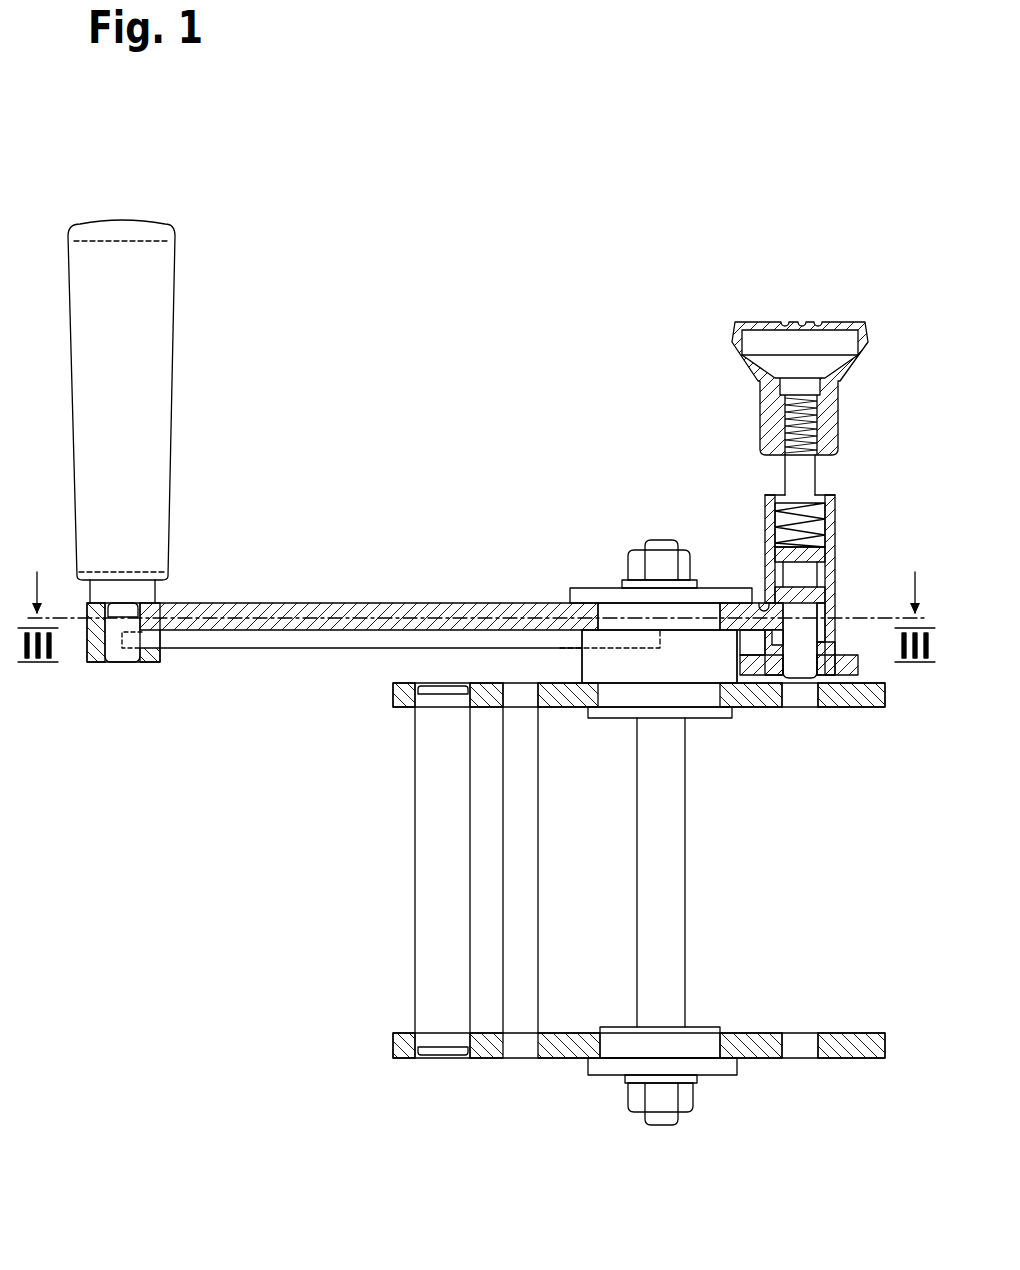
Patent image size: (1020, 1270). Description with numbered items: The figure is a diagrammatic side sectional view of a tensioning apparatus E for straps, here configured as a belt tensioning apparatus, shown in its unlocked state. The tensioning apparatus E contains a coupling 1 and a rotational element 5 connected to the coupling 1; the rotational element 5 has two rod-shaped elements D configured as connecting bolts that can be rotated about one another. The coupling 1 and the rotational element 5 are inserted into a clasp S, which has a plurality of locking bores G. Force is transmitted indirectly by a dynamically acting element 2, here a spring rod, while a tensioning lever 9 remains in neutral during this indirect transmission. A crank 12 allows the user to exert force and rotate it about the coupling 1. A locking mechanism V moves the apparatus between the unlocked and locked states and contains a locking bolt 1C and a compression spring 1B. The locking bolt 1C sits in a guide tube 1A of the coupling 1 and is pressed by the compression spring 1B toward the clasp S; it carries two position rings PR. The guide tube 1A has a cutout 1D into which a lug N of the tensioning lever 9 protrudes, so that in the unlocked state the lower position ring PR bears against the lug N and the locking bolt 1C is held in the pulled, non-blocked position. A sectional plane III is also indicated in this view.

The coupling 1 is at (700, 662).
The guide tube 1A is at (768, 530).
The compression spring 1B is at (820, 525).
The locking bolt 1C is at (805, 478).
The cutout 1D is at (763, 604).
The dynamically acting element 2 is at (275, 650).
The rotational element 5 is at (727, 852).
The tensioning lever 9 is at (388, 602).
The crank 12 is at (160, 344).
The rod-shaped element D is at (675, 905).
The tensioning apparatus E is at (764, 238).
The locking bore G is at (525, 698).
The lug N is at (801, 677).
The position ring PR is at (815, 556).
The clasp S is at (395, 690).
The locking mechanism V is at (740, 468).
The sectional plane III- III is at (476, 617).